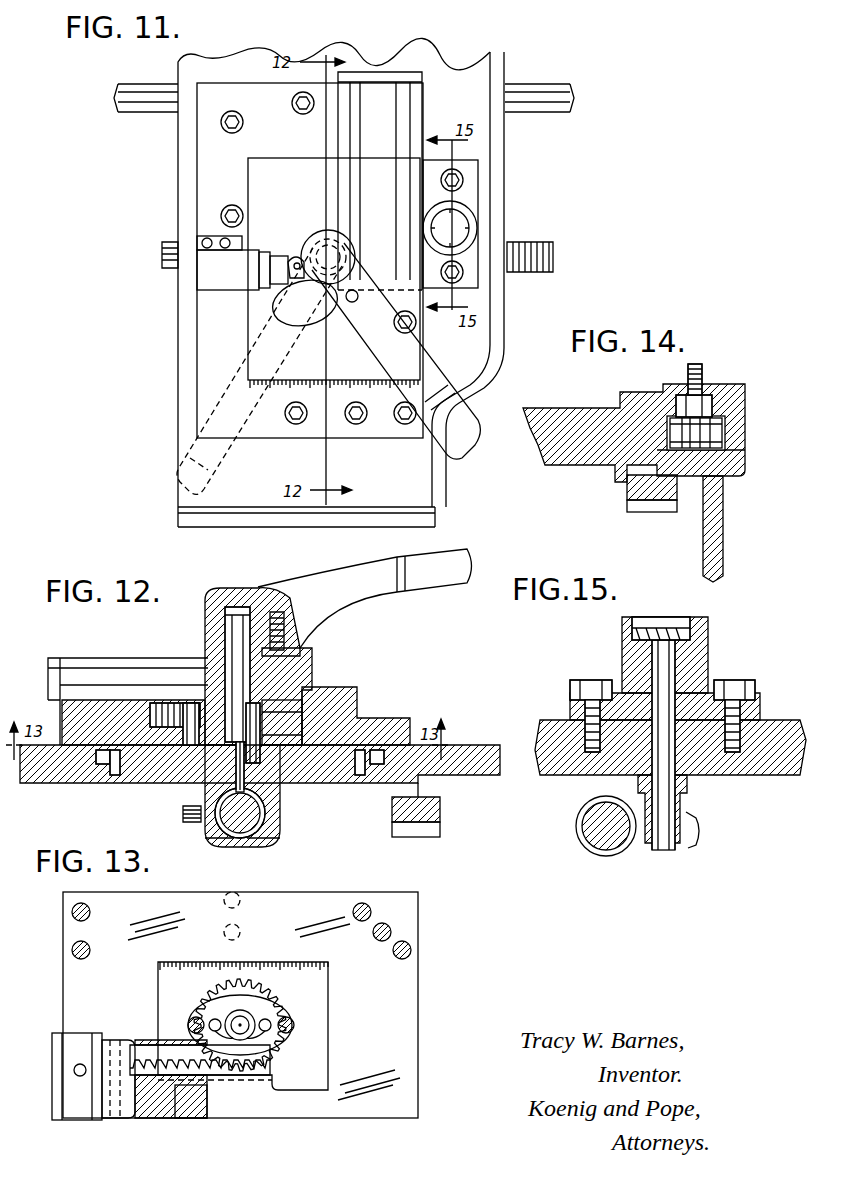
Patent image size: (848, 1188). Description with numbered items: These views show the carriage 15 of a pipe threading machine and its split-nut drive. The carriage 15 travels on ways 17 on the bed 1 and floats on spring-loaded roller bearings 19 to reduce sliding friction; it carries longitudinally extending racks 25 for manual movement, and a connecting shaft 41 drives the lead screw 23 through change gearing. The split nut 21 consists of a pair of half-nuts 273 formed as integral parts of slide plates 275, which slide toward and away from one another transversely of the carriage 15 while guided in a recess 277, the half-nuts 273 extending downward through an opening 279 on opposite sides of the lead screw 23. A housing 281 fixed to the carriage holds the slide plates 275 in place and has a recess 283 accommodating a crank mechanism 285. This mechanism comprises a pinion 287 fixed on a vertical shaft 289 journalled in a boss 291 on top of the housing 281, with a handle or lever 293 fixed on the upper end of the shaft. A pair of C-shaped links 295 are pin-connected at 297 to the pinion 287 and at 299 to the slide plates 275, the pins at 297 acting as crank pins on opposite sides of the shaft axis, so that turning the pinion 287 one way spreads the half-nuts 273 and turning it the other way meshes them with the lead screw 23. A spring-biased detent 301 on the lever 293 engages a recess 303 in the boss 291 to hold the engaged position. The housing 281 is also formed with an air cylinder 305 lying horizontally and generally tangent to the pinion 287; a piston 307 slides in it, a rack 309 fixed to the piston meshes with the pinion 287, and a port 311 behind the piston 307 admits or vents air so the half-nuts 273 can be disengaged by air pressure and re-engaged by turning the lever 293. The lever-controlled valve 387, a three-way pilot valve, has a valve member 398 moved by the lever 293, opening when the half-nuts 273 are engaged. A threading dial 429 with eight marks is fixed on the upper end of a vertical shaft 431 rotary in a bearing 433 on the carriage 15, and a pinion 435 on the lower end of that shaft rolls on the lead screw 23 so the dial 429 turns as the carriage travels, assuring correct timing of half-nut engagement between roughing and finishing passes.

In FIG. 14, the bed 1 is at (715, 540).
In FIG. 11, the carriage 15 is at (503, 70).
In FIG. 14, the carriage 15 is at (590, 415).
In FIG. 15, the carriage 15 is at (772, 735).
In FIG. 12, the carriage 15 is at (490, 727).
In FIG. 14, the ways 17 is at (735, 465).
In FIG. 14, the spring-loaded roller bearings 19 is at (725, 428).
In FIG. 12, the split nut 21 is at (282, 815).
In FIG. 11, the lead screw 23 is at (168, 255).
In FIG. 15, the lead screw 23 is at (580, 828).
In FIG. 12, the lead screw 23 is at (252, 820).
In FIG. 14, the racks 25 is at (633, 496).
In FIG. 12, the racks 25 is at (440, 830).
In FIG. 11, the connecting shaft 41 is at (520, 112).
In FIG. 12, the half-nuts 273 is at (215, 845).
In FIG. 12, the slide plates 275 is at (118, 762).
In FIG. 12, the recess 277 is at (100, 765).
In FIG. 12, the opening 279 is at (268, 770).
In FIG. 11, the housing 281 is at (340, 375).
In FIG. 12, the housing 281 is at (352, 705).
In FIG. 12, the recess 283 is at (340, 690).
In FIG. 13, the recess 283 is at (325, 998).
In FIG. 12, the crank mechanism 285 is at (157, 722).
In FIG. 13, the crank mechanism 285 is at (190, 993).
In FIG. 12, the pinion 287 is at (276, 712).
In FIG. 13, the pinion 287 is at (272, 992).
In FIG. 11, the vertical shaft 289 is at (332, 240).
In FIG. 12, the vertical shaft 289 is at (235, 660).
In FIG. 13, the vertical shaft 289 is at (252, 1017).
In FIG. 12, the boss 291 is at (308, 655).
In FIG. 11, the lever 293 is at (452, 432).
In FIG. 12, the lever 293 is at (430, 573).
In FIG. 12, the C-shaped links 295 is at (180, 740).
In FIG. 13, the C-shaped links 295 is at (203, 1008).
In FIG. 12, the pins 297 is at (200, 700).
In FIG. 13, the pins 297 is at (253, 1043).
In FIG. 12, the pin connections 299 is at (188, 757).
In FIG. 13, the pin connections 299 is at (190, 1024).
In FIG. 11, the spring-biased detent 301 is at (358, 292).
In FIG. 12, the spring-biased detent 301 is at (295, 630).
In FIG. 12, the recess 303 is at (300, 652).
In FIG. 11, the air cylinder 305 is at (352, 130).
In FIG. 12, the air cylinder 305 is at (122, 668).
In FIG. 13, the air cylinder 305 is at (163, 1110).
In FIG. 13, the piston 307 is at (113, 1110).
In FIG. 13, the rack 309 is at (193, 1115).
In FIG. 13, the port 311 is at (80, 1065).
In FIG. 11, the lever-controlled valve 387 is at (245, 262).
In FIG. 11, the valve member 398 is at (292, 256).
In FIG. 11, the threading dial 429 is at (432, 228).
In FIG. 15, the threading dial 429 is at (660, 617).
In FIG. 15, the vertical shaft 431 is at (663, 848).
In FIG. 15, the bearing 433 is at (712, 660).
In FIG. 15, the pinion 435 is at (697, 830).
In FIG. 12, the pinion 435 is at (183, 816).